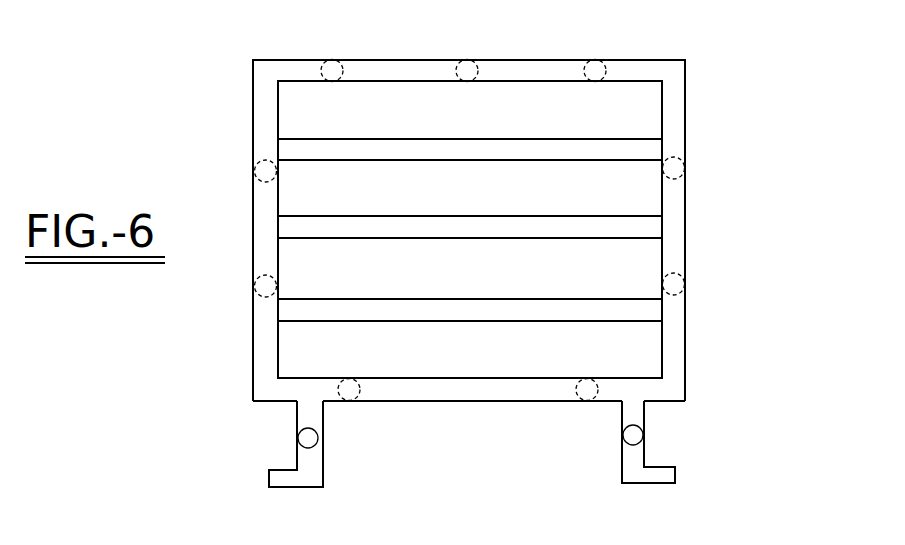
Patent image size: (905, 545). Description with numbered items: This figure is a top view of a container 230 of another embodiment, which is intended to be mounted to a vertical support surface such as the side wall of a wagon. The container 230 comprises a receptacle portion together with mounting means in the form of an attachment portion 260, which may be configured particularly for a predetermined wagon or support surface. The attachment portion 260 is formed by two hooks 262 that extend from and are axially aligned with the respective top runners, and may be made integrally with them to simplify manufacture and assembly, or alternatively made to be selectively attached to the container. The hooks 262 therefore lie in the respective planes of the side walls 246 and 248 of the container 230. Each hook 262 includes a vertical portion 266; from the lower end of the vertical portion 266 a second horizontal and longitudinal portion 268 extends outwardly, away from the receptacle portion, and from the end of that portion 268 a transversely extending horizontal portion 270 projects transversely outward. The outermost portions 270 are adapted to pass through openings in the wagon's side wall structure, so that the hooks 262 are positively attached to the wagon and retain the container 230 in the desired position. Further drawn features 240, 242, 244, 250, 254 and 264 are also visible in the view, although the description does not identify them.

The container 230 is at (240, 97).
The outer frame 240 is at (690, 237).
The horizontal rails 242 is at (467, 232).
The top fasteners 244 is at (467, 62).
The side wall 246 is at (256, 162).
The side wall 248 is at (682, 165).
The bottom fasteners 250 is at (577, 397).
The inner panel 254 is at (268, 354).
The attachment portion 260 is at (288, 430).
The hooks 262 is at (655, 436).
The rod 264 is at (312, 428).
The vertical portion 266 is at (316, 447).
The second horizontal and longitudinal portion 268 is at (307, 465).
The transversely extending horizontal portion 270 is at (272, 488).